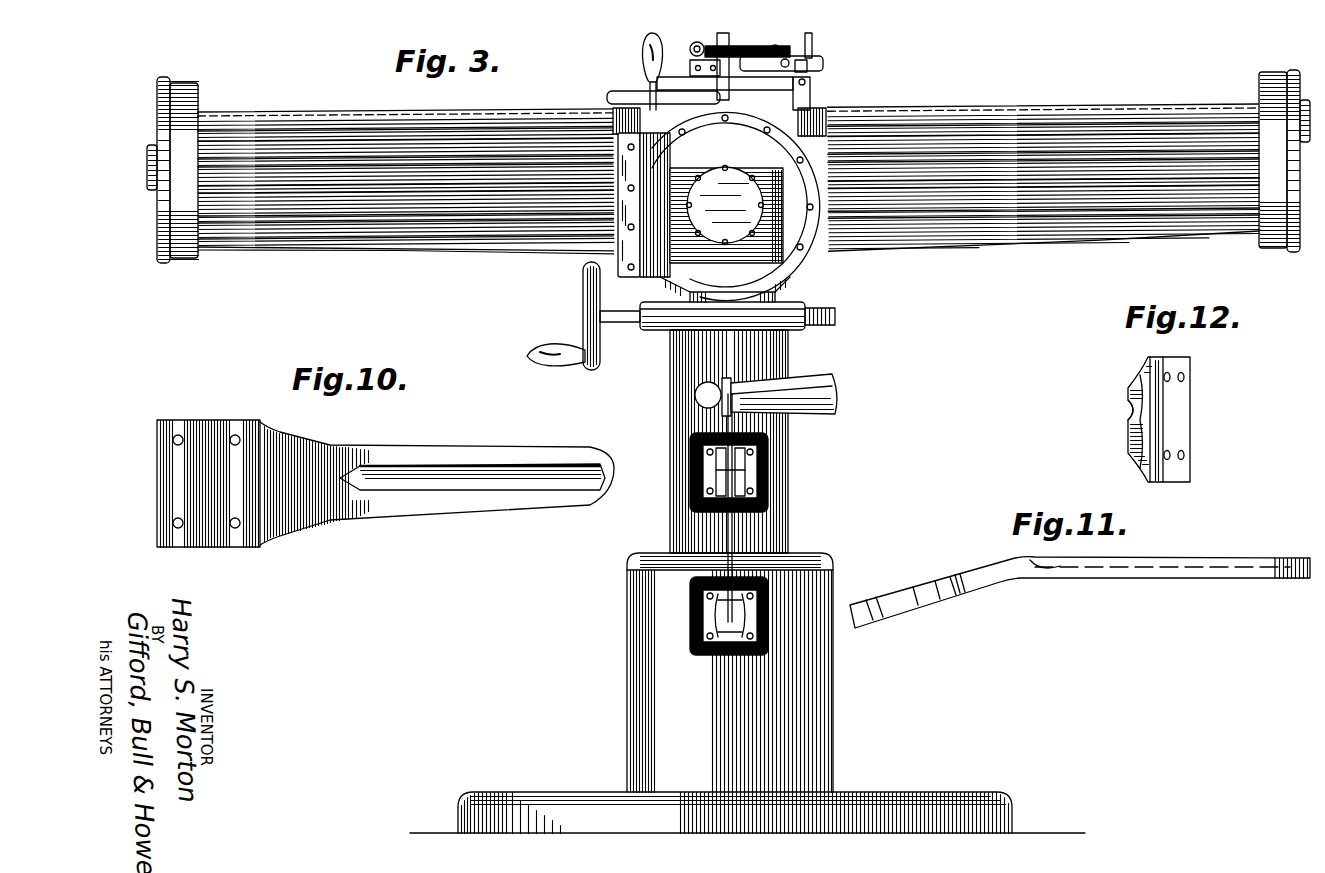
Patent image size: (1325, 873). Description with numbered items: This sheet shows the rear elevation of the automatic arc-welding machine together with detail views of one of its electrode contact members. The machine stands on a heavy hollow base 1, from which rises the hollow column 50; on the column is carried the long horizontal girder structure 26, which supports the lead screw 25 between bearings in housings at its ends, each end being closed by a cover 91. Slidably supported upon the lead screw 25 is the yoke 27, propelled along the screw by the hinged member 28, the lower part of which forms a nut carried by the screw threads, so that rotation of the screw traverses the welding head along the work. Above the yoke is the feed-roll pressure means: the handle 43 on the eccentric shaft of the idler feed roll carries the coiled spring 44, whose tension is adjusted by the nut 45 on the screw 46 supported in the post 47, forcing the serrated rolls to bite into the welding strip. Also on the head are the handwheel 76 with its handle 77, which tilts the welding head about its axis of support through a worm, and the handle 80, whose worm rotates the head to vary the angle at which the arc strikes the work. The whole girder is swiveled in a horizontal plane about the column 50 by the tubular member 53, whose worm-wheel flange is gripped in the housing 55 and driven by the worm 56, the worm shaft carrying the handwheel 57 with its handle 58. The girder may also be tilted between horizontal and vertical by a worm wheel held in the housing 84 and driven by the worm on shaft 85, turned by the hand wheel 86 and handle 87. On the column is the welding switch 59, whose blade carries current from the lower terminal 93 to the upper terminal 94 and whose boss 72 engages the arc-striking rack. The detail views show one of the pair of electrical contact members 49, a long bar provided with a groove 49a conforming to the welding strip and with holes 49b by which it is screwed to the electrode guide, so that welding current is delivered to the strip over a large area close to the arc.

In FIG. 3, the hollow base 1 is at (834, 676).
In FIG. 3, the lead screw 25 is at (1040, 112).
In FIG. 3, the girder structure 26 is at (1160, 240).
In FIG. 3, the yoke 27 is at (686, 60).
In FIG. 3, the hinged member 28 is at (747, 41).
In FIG. 3, the handle 43 is at (709, 62).
In FIG. 3, the coiled spring 44 is at (785, 56).
In FIG. 3, the nut 45 is at (812, 40).
In FIG. 3, the screw 46 is at (736, 112).
In FIG. 3, the post 47 is at (810, 86).
In FIG. 10, the electrical contact members 49 is at (157, 496).
In FIG. 12, the electrical contact members 49 is at (1192, 420).
In FIG. 11, the electrical contact members 49 is at (858, 600).
In FIG. 10, the groove 49a is at (515, 492).
In FIG. 12, the groove 49a is at (1126, 412).
In FIG. 11, the groove 49a is at (1210, 565).
In FIG. 10, the holes 49b is at (182, 529).
In FIG. 12, the holes 49b is at (1186, 455).
In FIG. 11, the holes 49b is at (866, 614).
In FIG. 3, the hollow column 50 is at (789, 540).
In FIG. 3, the tubular member 53 is at (770, 290).
In FIG. 3, the housing 55 is at (836, 316).
In FIG. 3, the worm 56 is at (635, 323).
In FIG. 3, the handwheel 57 is at (592, 371).
In FIG. 3, the handle 58 is at (533, 366).
In FIG. 3, the welding switch 59 is at (735, 525).
In FIG. 3, the boss 72 is at (694, 400).
In FIG. 3, the handwheel 76 is at (808, 66).
In FIG. 3, the handle 77 is at (812, 54).
In FIG. 3, the handle 80 is at (840, 112).
In FIG. 3, the housing 84 is at (820, 203).
In FIG. 3, the worm shaft 85 is at (648, 92).
In FIG. 3, the hand wheel 86 is at (608, 93).
In FIG. 3, the handle 87 is at (642, 42).
In FIG. 3, the cover 91 is at (158, 240).
In FIG. 3, the lower terminal 93 is at (750, 610).
In FIG. 3, the upper terminal 94 is at (745, 458).